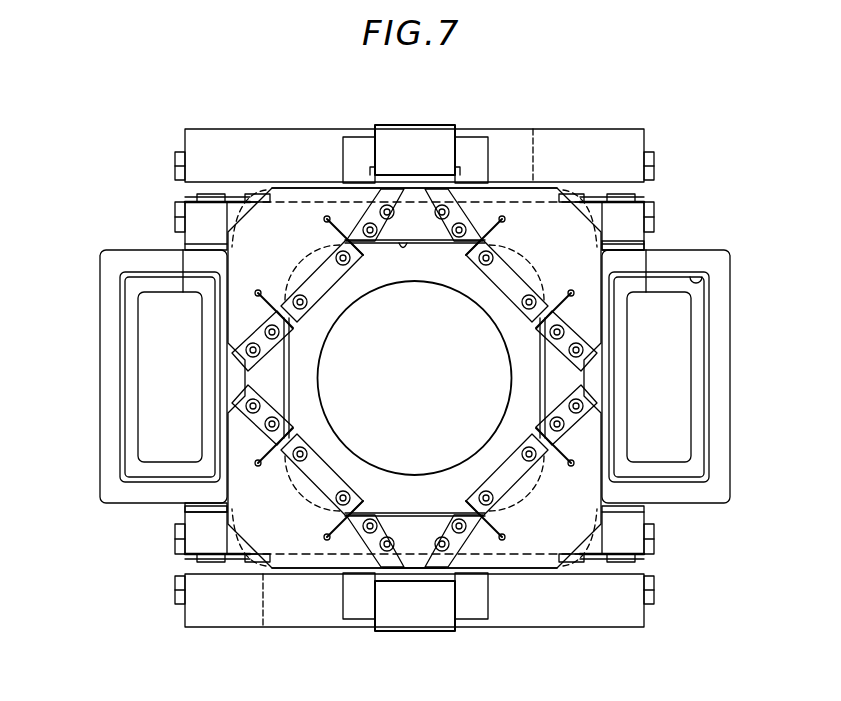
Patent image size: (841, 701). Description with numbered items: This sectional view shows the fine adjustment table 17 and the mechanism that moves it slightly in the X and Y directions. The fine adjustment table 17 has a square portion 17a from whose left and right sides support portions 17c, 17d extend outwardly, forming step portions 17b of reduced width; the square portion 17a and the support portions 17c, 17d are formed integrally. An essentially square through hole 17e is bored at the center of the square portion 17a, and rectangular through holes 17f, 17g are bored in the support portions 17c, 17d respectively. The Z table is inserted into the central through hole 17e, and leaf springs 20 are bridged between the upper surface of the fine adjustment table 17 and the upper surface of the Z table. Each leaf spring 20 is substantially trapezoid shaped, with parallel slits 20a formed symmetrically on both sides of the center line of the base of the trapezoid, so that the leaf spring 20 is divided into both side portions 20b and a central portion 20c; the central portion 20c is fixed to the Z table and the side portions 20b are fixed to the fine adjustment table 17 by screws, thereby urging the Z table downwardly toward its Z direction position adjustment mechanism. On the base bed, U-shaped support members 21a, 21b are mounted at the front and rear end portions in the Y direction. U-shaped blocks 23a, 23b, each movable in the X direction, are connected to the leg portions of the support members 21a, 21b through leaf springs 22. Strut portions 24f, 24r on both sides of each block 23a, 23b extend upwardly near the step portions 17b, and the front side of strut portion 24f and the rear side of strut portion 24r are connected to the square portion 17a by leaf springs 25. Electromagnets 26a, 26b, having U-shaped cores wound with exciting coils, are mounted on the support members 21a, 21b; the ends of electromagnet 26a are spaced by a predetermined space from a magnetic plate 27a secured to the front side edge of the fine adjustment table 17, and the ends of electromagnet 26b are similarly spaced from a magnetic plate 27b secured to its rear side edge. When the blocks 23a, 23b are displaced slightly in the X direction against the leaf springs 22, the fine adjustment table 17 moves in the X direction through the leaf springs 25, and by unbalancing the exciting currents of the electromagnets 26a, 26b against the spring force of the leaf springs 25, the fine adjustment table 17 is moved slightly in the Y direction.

The fine adjustment table 17 is at (105, 263).
The square portion 17a is at (412, 547).
The step portions 17b is at (203, 247).
The support portion 17c is at (104, 450).
The support portion 17d is at (723, 500).
The square through hole 17e is at (403, 243).
The rectangular through hole 17f is at (130, 327).
The rectangular through hole 17g is at (703, 273).
The leaf springs 20 is at (293, 182).
The parallel slits 20a is at (332, 231).
The side portions 20b is at (373, 196).
The central portion 20c is at (333, 278).
The U-shaped support member 21a is at (533, 600).
The U-shaped support member 21b is at (533, 185).
The leaf springs 22 is at (181, 188).
The U-shaped block 23a is at (190, 512).
The U-shaped block 23b is at (645, 243).
The strut portion 24f is at (195, 545).
The strut portion 24r is at (200, 213).
The leaf springs 25 is at (238, 194).
The electromagnet 26a is at (387, 628).
The electromagnet 26b is at (439, 132).
The magnetic plate 27a is at (493, 565).
The magnetic plate 27b is at (495, 193).